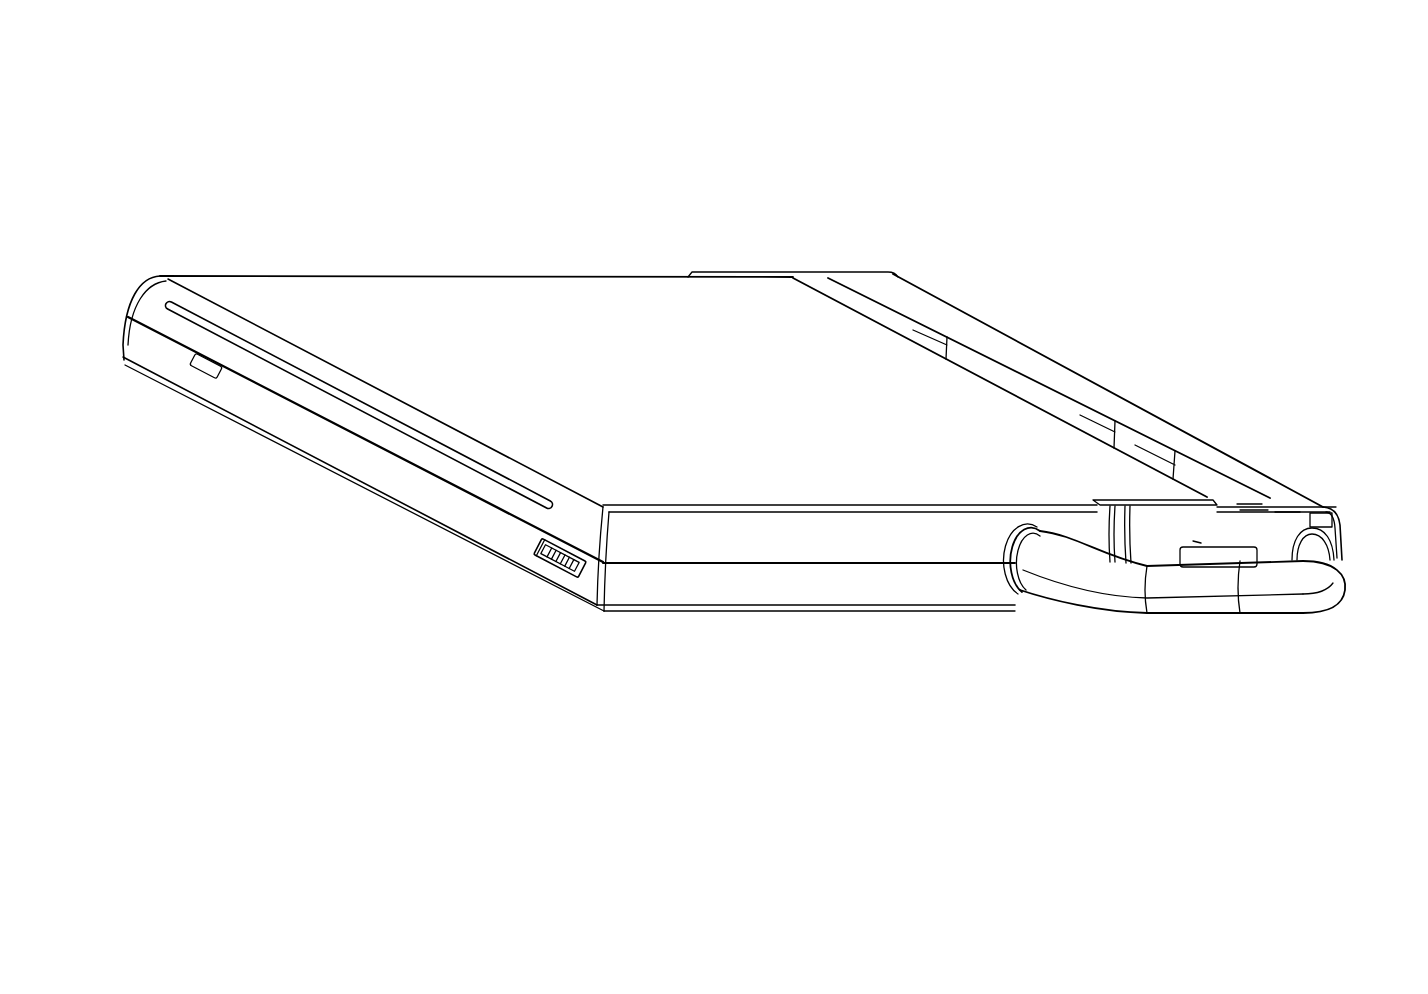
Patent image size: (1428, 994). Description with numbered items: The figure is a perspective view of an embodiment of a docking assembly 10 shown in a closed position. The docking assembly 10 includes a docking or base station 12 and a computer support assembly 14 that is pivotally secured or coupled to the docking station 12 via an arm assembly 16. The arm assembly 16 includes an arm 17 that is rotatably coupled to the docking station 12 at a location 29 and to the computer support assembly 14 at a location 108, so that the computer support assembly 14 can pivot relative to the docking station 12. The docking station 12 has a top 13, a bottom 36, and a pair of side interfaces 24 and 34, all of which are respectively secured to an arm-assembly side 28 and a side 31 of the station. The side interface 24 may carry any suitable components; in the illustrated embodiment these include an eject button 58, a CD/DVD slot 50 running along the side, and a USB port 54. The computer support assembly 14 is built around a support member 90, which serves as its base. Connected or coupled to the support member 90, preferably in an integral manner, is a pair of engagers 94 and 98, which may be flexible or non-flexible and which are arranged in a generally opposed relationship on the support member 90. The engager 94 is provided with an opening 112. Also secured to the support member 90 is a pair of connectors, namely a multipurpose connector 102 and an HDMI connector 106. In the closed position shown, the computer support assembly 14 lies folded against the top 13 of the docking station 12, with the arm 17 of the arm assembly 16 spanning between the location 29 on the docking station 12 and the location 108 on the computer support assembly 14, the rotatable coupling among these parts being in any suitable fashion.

The docking assembly 10 is at (207, 127).
The docking station 12 is at (478, 273).
The top 13 is at (604, 310).
The computer support assembly 14 is at (1125, 391).
The arm assembly 16 is at (1155, 636).
The arm 17 is at (1250, 606).
The side interface 24 is at (368, 497).
The arm-assembly side 28 is at (882, 585).
The location 29 is at (1033, 597).
The side 31 is at (645, 273).
The side interface 34 is at (980, 364).
The bottom 36 is at (668, 612).
The CD/DVD slot 50 is at (325, 393).
The USB port 54 is at (572, 568).
The eject button 58 is at (207, 370).
The support member 90 is at (1071, 375).
The engager 94 is at (1277, 522).
The engager 98 is at (788, 274).
The multipurpose connector 102 is at (1143, 452).
The HDMI connector 106 is at (913, 331).
The location 108 is at (1343, 552).
The opening 112 is at (1233, 555).